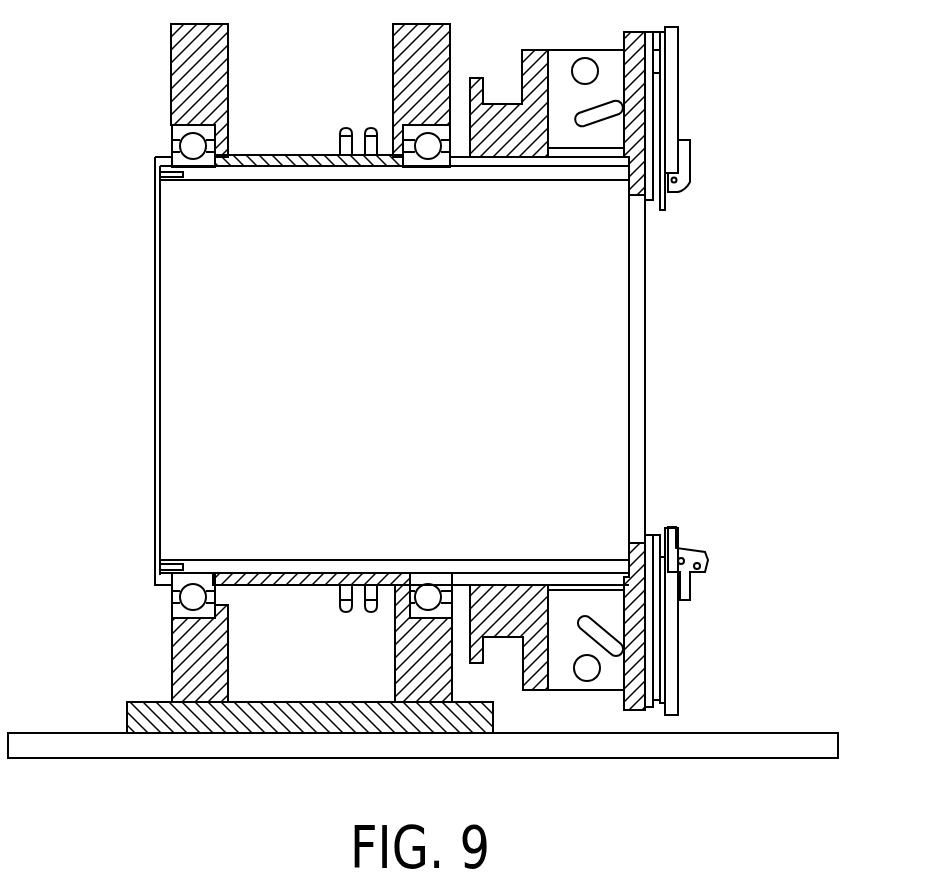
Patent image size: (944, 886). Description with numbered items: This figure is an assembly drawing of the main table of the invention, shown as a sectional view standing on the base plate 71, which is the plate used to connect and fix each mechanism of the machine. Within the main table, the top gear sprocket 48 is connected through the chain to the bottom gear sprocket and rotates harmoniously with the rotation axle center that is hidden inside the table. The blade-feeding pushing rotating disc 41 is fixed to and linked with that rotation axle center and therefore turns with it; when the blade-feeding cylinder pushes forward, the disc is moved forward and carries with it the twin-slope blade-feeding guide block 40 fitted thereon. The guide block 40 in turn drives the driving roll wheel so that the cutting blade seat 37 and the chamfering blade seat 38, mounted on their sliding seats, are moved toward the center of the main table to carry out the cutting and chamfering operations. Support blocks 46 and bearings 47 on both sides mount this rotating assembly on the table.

The cutting blade seat 37 is at (673, 196).
The chamfering blade seat 38 is at (676, 545).
The twin-slope blade-feeding guide block 40 is at (612, 75).
The blade-feeding pushing rotating disc 41 is at (533, 91).
The support block 46 is at (181, 83).
The bearing 47 is at (190, 148).
The top gear sprocket 48 is at (345, 130).
The base plate 71 is at (74, 748).